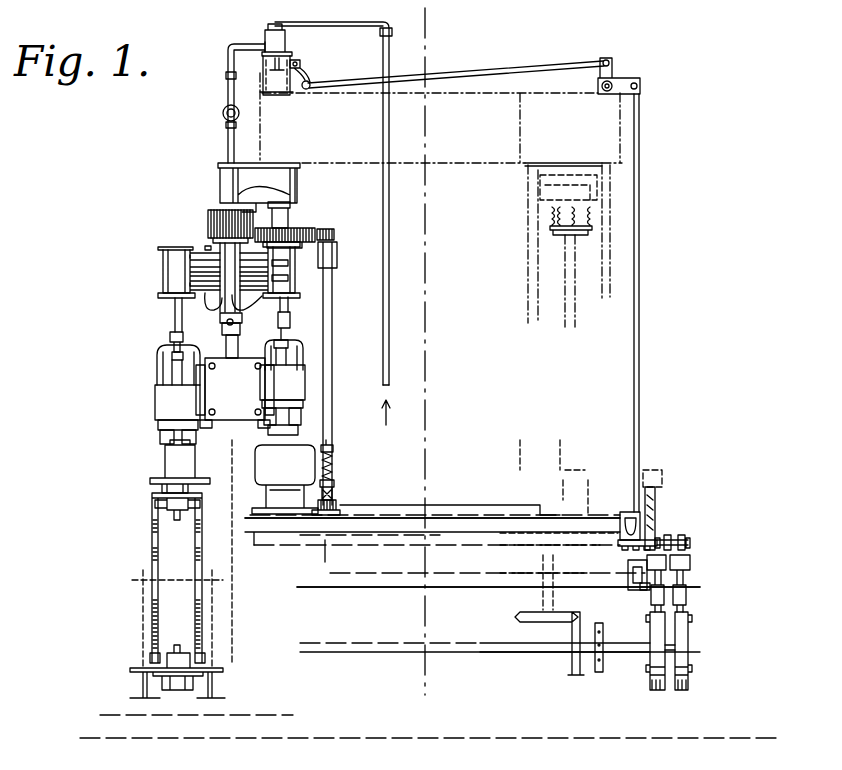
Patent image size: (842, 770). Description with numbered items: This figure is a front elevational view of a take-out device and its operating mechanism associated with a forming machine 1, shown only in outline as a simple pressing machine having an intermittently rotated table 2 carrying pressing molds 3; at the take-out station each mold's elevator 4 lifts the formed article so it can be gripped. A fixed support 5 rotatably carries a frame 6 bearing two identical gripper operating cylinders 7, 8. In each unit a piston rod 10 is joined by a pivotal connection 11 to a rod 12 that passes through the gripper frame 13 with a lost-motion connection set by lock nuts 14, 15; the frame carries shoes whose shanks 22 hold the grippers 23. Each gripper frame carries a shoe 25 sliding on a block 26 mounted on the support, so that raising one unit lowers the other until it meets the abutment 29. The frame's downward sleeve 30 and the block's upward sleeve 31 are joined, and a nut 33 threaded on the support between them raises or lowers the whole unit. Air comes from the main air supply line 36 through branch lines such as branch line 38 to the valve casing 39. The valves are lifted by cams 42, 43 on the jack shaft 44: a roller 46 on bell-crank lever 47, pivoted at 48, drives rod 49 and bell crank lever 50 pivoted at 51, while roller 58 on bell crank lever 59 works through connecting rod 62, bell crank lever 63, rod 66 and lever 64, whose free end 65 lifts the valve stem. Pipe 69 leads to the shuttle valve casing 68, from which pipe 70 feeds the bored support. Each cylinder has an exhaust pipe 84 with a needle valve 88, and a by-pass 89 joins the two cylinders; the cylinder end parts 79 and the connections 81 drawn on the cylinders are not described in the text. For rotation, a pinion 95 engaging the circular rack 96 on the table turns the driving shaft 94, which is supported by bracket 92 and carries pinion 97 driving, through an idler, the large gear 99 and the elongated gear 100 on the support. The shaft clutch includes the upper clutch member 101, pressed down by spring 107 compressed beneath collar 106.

The forming machine 1 is at (325, 562).
The table 2 is at (197, 478).
The pressing molds 3 is at (255, 460).
The elevator 4 is at (429, 524).
The support 5 is at (232, 585).
The frame 6 is at (220, 254).
The gripper operating cylinder 7 is at (296, 282).
The gripper operating cylinder 8 is at (163, 266).
The piston rod 10 is at (175, 320).
The pivotal connection 11 is at (168, 338).
The rod 12 is at (170, 345).
The frame 13 is at (158, 388).
The lock nut 14 is at (160, 368).
The lock nut 15 is at (184, 357).
The shank 22 is at (158, 426).
The grippers 23 is at (190, 440).
The shoe 25 is at (210, 420).
The block 26 is at (242, 420).
The abutment 29 is at (265, 426).
The sleeve 30 is at (220, 322).
The sleeve 31 is at (245, 326).
The nut 33 is at (215, 340).
The main air supply line 36 is at (390, 240).
The branch line 38 is at (372, 30).
The valve casing 39 is at (266, 34).
The cam 42 is at (660, 692).
The cam 43 is at (682, 692).
The jack shaft 44 is at (622, 652).
The roller 46 is at (652, 612).
The bell-crank lever 47 is at (648, 592).
The pivot 48 is at (668, 540).
The rod 49 is at (617, 545).
The bell crank lever 50 is at (620, 525).
The pivot 51 is at (634, 510).
The roller 58 is at (688, 606).
The bell crank lever 59 is at (690, 582).
The connecting rod 62 is at (641, 275).
The bell crank lever 63 is at (638, 80).
The lever 64 is at (308, 72).
The free end 65 is at (262, 74).
The rod 66 is at (558, 68).
The shuttle valve casing 68 is at (223, 113).
The pipe 69 is at (228, 82).
The pipe 70 is at (228, 140).
The lower cylinder head 79 is at (168, 293).
The hose 81 is at (228, 307).
The exhaust pipe 84 is at (262, 230).
The needle valve 88 is at (281, 267).
The by-pass 89 is at (192, 262).
The bracket 92 is at (338, 248).
The driving shaft 94 is at (306, 390).
The pinion 95 is at (338, 512).
The circular rack 96 is at (456, 508).
The pinion 97 is at (332, 229).
The large gear 99 is at (300, 228).
The gear 100 is at (208, 226).
The upper clutch member 101 is at (336, 487).
The collar 106 is at (336, 460).
The spring 107 is at (335, 472).